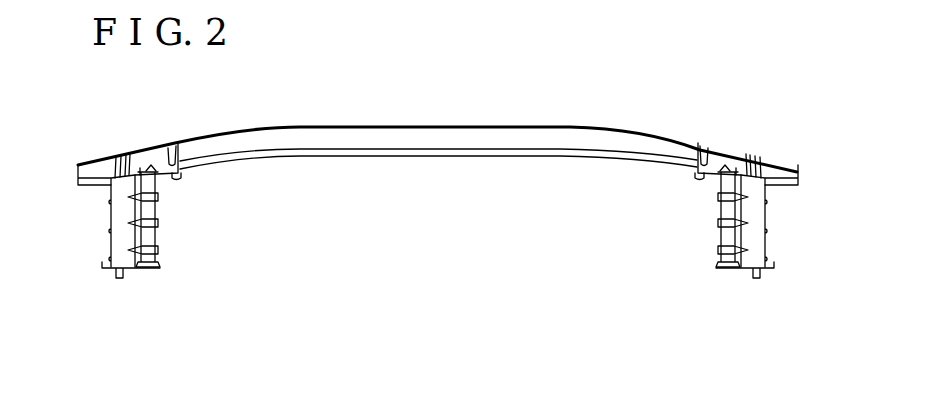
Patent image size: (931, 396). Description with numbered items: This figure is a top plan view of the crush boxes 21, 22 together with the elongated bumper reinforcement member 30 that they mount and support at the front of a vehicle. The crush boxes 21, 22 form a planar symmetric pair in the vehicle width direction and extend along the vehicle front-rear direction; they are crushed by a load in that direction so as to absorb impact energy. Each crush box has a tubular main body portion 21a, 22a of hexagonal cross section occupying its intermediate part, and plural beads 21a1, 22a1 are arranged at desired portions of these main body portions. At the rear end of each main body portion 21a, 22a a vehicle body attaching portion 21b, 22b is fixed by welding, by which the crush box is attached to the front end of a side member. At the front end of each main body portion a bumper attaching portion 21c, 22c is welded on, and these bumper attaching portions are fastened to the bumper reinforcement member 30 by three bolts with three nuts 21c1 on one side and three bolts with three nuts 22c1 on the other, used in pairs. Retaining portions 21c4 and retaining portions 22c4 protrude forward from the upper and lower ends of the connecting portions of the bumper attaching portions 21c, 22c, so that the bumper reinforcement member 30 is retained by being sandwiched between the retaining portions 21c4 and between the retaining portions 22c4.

The bumper reinforcement member 30 is at (446, 127).
The crush box 21 is at (729, 216).
The main body portion 21a is at (767, 250).
The beads 21a1 is at (737, 253).
The vehicle body attaching portion 21b is at (745, 268).
The bumper attaching portion 21c is at (727, 158).
The nuts 21c1 is at (706, 178).
The retaining portions 21c4 is at (768, 172).
The crush box 22 is at (148, 212).
The main body portion 22a is at (110, 240).
The beads 22a1 is at (135, 250).
The vehicle body attaching portion 22b is at (140, 268).
The bumper attaching portion 22c is at (140, 160).
The nuts 22c1 is at (180, 177).
The retaining portions 22c4 is at (107, 162).